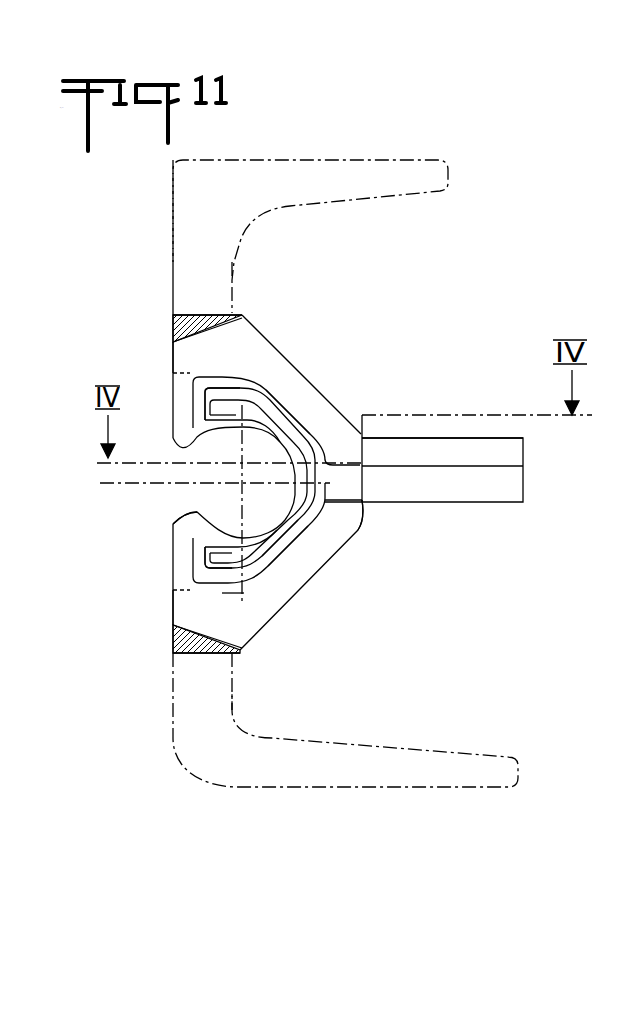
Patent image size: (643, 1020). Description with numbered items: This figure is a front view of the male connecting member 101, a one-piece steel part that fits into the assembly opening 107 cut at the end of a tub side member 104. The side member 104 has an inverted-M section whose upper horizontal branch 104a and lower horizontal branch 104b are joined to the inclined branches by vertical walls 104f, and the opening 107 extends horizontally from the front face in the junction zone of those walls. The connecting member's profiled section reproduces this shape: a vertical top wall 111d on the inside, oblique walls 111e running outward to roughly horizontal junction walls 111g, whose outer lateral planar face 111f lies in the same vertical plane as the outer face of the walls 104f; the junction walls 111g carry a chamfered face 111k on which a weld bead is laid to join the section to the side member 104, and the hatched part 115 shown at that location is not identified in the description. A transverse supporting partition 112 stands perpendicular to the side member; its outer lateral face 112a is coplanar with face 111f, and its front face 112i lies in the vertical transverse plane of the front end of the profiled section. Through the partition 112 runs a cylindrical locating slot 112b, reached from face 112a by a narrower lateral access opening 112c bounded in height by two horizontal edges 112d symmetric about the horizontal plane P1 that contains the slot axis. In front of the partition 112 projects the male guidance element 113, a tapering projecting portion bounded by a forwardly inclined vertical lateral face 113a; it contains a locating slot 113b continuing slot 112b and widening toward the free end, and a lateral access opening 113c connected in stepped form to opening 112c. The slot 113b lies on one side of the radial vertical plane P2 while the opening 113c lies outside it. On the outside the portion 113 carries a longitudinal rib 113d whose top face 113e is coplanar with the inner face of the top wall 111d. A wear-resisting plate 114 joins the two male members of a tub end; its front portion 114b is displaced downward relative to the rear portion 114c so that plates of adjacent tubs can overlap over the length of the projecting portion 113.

The male connecting member 101 is at (329, 590).
The side member 104 is at (165, 254).
The upper horizontal branch 104a is at (393, 168).
The lower horizontal branch 104b is at (418, 775).
The vertical wall 104f is at (213, 247).
The assembly opening 107 is at (212, 307).
The top wall 111d is at (318, 575).
The oblique wall 111e is at (297, 397).
The outer lateral planar face 111f is at (160, 345).
The junction wall 111g is at (228, 337).
The chamfered face 111k is at (185, 652).
The supporting partition 112 is at (183, 540).
The outer lateral planar face 112a is at (161, 393).
The locating slot 112b is at (272, 525).
The lateral access opening 112c is at (184, 509).
The horizontal edge 112d is at (193, 513).
The front face 112i is at (183, 425).
The male guidance element 113 is at (238, 627).
The vertical lateral face 113a is at (205, 408).
The locating slot 113b is at (266, 543).
The lateral access opening 113c is at (306, 384).
The rib 113d is at (360, 495).
The top face 113e is at (372, 489).
The wear-resisting plate 114 is at (420, 443).
The front portion 114b is at (507, 487).
The rear portion 114c is at (473, 452).
The washer 115 is at (173, 318).
The horizontal plane P1 is at (125, 482).
The radial vertical plane P2 is at (219, 611).